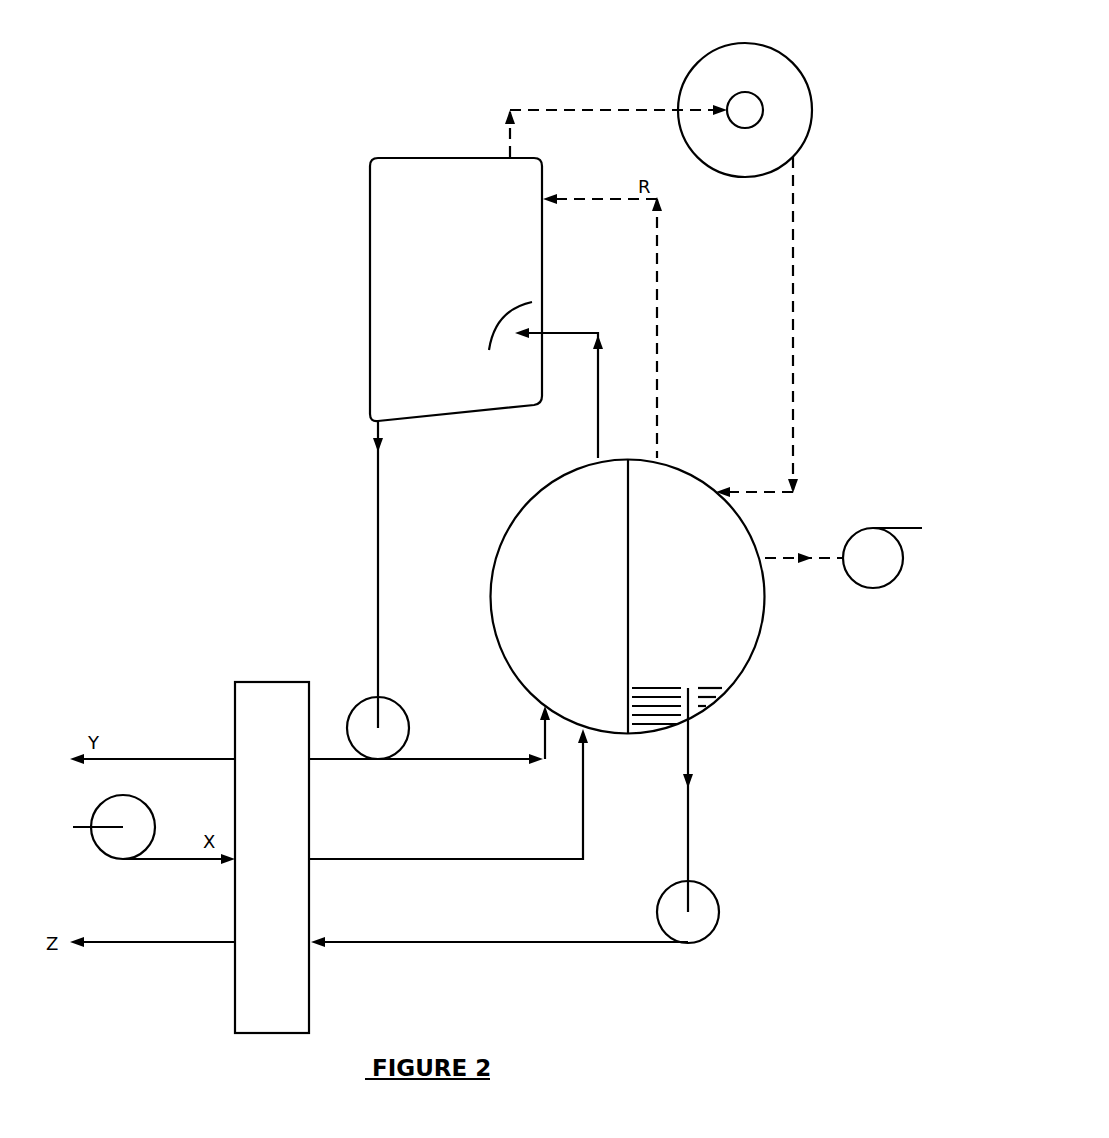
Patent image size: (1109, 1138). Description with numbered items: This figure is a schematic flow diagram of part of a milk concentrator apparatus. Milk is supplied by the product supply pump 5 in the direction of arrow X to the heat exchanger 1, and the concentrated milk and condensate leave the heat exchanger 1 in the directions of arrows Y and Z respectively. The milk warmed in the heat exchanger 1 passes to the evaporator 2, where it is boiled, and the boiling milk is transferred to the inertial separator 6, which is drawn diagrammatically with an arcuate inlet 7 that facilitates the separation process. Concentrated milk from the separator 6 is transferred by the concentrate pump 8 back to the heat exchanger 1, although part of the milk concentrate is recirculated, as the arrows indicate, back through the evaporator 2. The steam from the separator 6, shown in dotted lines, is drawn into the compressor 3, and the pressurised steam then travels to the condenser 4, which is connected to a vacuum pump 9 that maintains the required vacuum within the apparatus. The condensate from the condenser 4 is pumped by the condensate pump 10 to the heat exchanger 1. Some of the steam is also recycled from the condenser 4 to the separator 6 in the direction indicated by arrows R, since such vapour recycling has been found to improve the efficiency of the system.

The heat exchanger 1 is at (272, 857).
The evaporator 2 is at (586, 586).
The compressor 3 is at (797, 105).
The condenser 4 is at (677, 643).
The product supply pump 5 is at (132, 823).
The inertial separator 6 is at (463, 330).
The arcuate inlet 7 is at (509, 312).
The concentrate pump 8 is at (388, 723).
The vacuum pump 9 is at (873, 543).
The condensate pump 10 is at (698, 908).